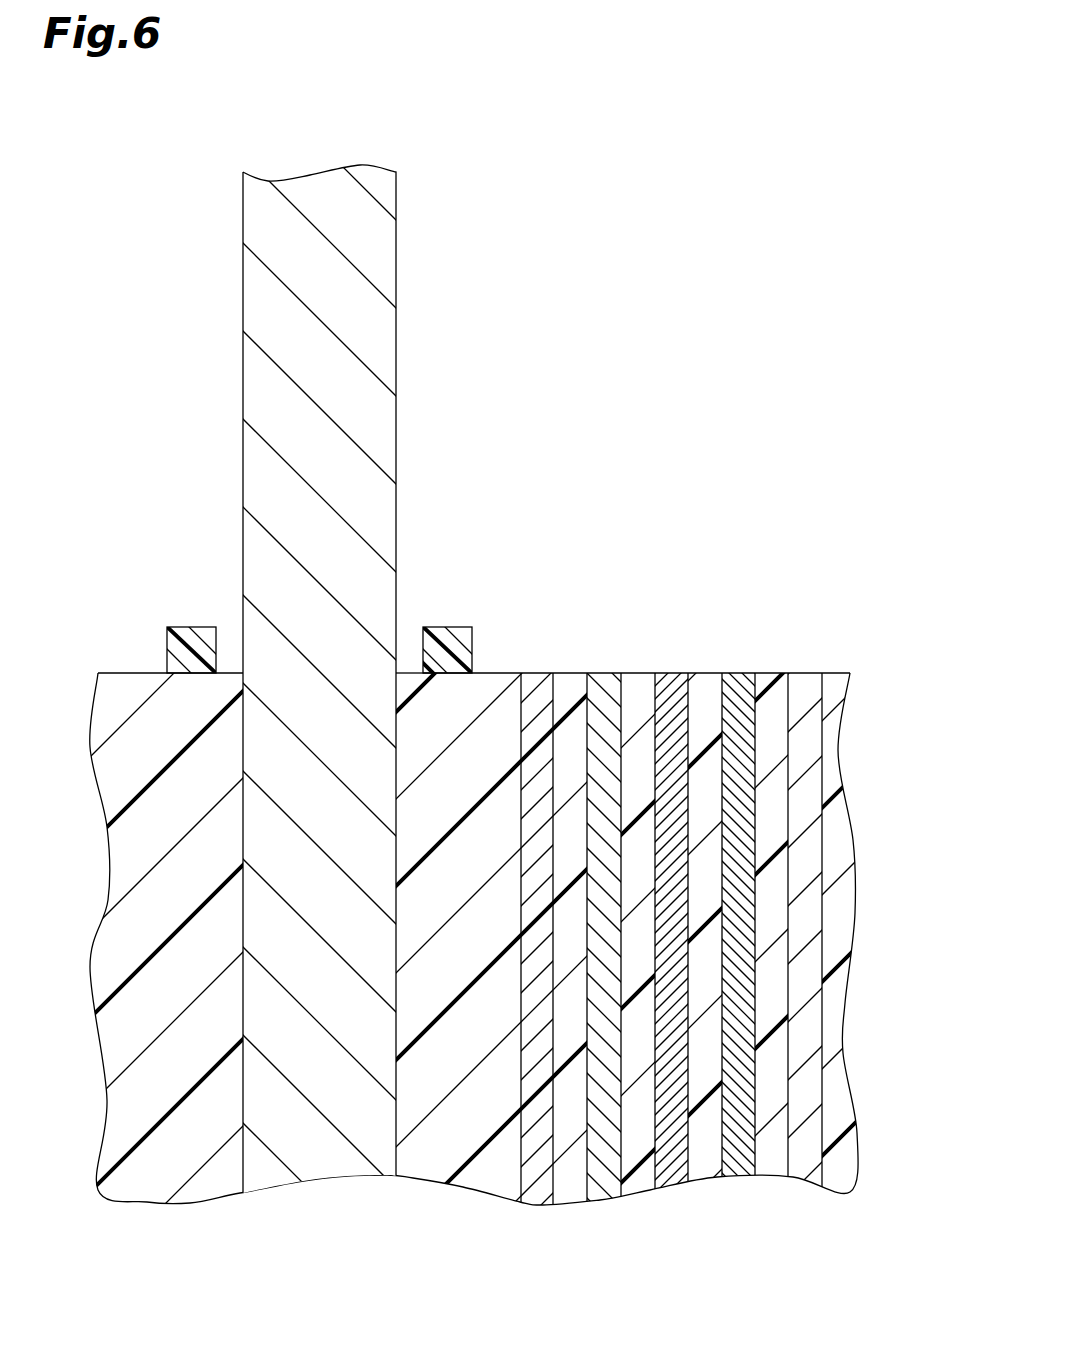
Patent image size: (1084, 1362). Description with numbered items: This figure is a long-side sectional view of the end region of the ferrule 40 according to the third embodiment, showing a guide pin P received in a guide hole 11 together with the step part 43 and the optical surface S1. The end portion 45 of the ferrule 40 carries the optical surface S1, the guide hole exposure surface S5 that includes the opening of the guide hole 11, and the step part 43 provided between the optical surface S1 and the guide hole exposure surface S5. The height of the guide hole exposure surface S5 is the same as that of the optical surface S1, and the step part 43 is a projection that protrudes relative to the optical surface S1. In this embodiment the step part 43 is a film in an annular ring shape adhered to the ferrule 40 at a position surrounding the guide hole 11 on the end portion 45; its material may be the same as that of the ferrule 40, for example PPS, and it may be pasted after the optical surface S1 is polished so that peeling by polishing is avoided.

The ferrule 40 is at (897, 668).
The optical surface S1 is at (850, 654).
The end portion 45 is at (808, 600).
The pin P is at (360, 285).
The guide hole 11 is at (395, 692).
The guide hole exposure surface S5 is at (408, 672).
The step part 43 is at (472, 647).